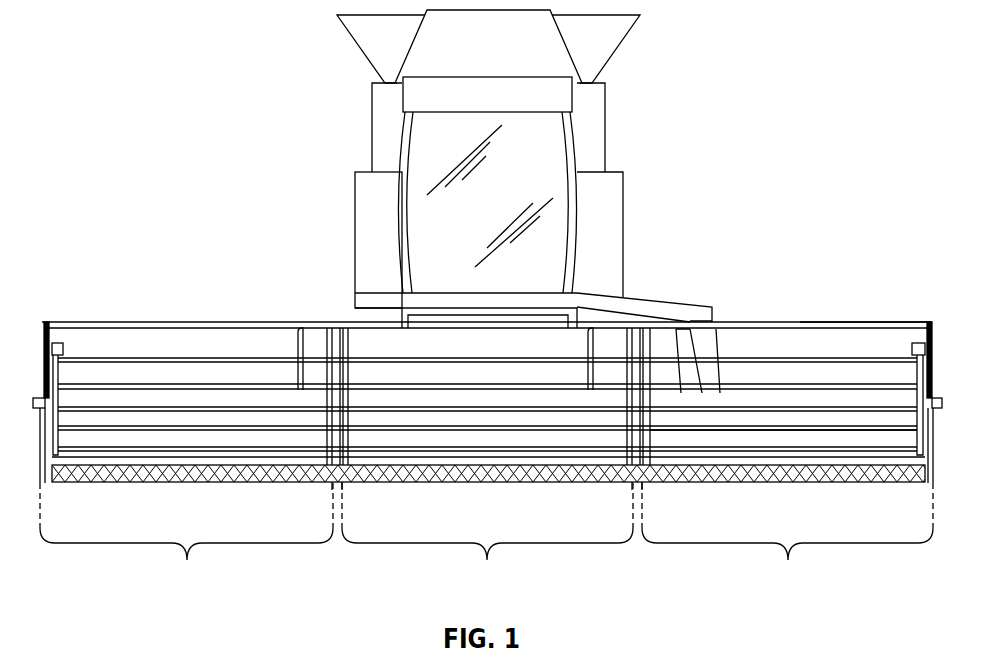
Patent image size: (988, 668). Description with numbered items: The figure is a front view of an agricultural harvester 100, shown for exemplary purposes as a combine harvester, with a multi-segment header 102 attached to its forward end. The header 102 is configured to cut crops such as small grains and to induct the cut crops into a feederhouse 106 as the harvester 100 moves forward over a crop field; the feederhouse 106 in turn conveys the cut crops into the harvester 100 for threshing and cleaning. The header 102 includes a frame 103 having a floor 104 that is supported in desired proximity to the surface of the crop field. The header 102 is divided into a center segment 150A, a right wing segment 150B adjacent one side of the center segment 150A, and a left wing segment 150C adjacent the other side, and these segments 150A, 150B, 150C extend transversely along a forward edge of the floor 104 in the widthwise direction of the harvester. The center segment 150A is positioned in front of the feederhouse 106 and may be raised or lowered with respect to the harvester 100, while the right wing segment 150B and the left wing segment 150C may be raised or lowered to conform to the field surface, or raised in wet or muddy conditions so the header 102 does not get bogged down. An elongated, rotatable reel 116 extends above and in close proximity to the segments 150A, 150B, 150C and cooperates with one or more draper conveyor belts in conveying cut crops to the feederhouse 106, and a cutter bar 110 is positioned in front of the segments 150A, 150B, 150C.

The agricultural harvester 100 is at (250, 155).
The header 102 is at (100, 309).
The frame 103 is at (880, 320).
The floor 104 is at (160, 465).
The feederhouse 106 is at (533, 325).
The cutter bar 110 is at (518, 482).
The rotatable reel 116 is at (837, 423).
The center segment 150A is at (487, 538).
The right wing segment 150B is at (186, 538).
The left wing segment 150C is at (787, 538).